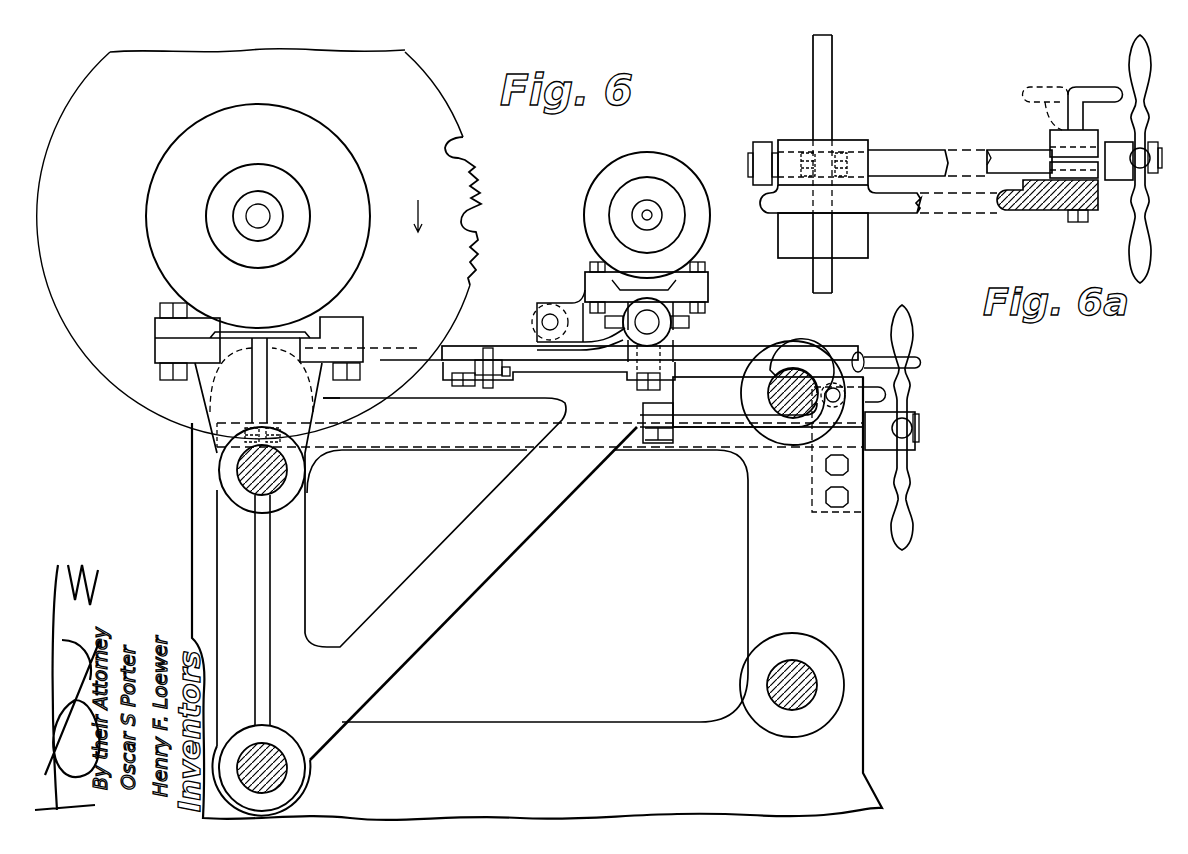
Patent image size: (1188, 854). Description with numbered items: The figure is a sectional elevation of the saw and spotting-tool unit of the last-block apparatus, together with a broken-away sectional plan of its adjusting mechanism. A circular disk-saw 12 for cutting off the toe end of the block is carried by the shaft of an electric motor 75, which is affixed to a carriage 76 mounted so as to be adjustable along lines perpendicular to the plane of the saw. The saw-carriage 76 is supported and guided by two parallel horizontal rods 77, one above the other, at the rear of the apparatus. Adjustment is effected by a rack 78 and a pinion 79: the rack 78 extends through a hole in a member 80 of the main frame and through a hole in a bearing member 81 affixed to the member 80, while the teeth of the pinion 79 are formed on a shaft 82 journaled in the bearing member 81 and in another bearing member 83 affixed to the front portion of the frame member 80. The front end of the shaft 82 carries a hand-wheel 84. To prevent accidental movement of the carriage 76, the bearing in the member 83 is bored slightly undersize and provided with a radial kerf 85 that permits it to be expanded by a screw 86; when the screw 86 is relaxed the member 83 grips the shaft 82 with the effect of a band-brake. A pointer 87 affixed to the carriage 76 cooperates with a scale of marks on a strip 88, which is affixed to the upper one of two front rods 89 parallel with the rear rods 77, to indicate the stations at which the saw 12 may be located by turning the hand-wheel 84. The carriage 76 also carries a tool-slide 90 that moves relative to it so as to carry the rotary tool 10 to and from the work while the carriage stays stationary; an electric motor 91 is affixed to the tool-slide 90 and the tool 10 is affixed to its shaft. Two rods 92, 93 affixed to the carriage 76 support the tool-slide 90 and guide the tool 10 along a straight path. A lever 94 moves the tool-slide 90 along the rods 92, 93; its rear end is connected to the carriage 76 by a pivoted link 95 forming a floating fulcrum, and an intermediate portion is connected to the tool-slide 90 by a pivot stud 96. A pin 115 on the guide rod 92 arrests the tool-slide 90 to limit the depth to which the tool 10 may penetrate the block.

In FIG. 6, the rotary tool 10 is at (647, 210).
In FIG. 6, the circular disk-saw 12 is at (84, 350).
In FIG. 6, the electric motor 75 is at (257, 115).
In FIG. 6, the carriage 76 is at (428, 553).
In FIG. 6, the horizontal rods 77 is at (282, 487).
In FIG. 6, the rack 78 is at (257, 418).
In FIG. 6A, the rack 78 is at (818, 73).
In FIG. 6, the pinion 79 is at (270, 425).
In FIG. 6A, the pinion 79 is at (807, 152).
In FIG. 6, the frame member 80 is at (757, 570).
In FIG. 6A, the frame member 80 is at (897, 206).
In FIG. 6, the bearing member 81 is at (287, 357).
In FIG. 6A, the bearing member 81 is at (845, 140).
In FIG. 6, the shaft 82 is at (350, 443).
In FIG. 6A, the shaft 82 is at (930, 150).
In FIG. 6, the bearing member 83 is at (812, 482).
In FIG. 6A, the bearing member 83 is at (1050, 131).
In FIG. 6, the hand-wheel 84 is at (905, 517).
In FIG. 6A, the hand-wheel 84 is at (1130, 243).
In FIG. 6A, the radial kerf 85 is at (1045, 160).
In FIG. 6, the screw 86 is at (884, 396).
In FIG. 6A, the screw 86 is at (1090, 94).
In FIG. 6, the pointer 87 is at (707, 432).
In FIG. 6, the strip 88 is at (808, 374).
In FIG. 6, the rods 89 is at (768, 395).
In FIG. 6, the tool-slide 90 is at (710, 292).
In FIG. 6, the electric motor 91 is at (600, 182).
In FIG. 6, the guide rod 92 is at (660, 322).
In FIG. 6, the guide rod 93 is at (541, 322).
In FIG. 6, the lever 94 is at (920, 356).
In FIG. 6, the pivoted link 95 is at (456, 368).
In FIG. 6, the pivot stud 96 is at (637, 384).
In FIG. 6, the pin 115 is at (624, 322).